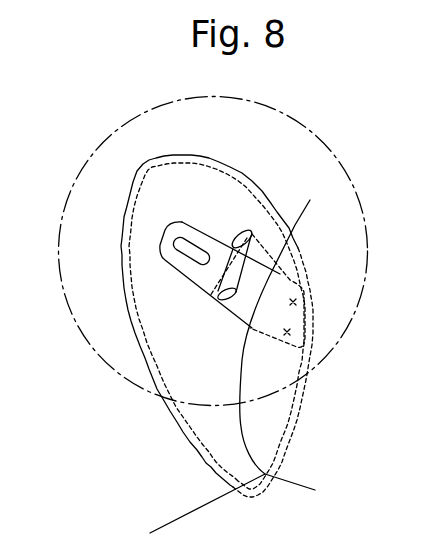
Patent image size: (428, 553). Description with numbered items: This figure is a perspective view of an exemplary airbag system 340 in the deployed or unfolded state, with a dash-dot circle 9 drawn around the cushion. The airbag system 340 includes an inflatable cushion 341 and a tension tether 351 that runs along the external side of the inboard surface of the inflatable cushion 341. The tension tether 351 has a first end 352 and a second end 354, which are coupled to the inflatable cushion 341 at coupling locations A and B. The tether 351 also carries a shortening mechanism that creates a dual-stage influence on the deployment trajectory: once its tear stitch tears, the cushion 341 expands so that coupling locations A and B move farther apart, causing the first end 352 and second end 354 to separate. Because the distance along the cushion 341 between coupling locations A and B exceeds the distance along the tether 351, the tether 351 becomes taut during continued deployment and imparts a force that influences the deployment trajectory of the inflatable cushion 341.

The circular region 9 is at (318, 127).
The airbag system 340 is at (86, 139).
The inflatable cushion 341 is at (236, 200).
The tension tether 351 is at (246, 304).
The first end 352 is at (178, 243).
The second end 354 is at (296, 320).
The coupling location A is at (290, 332).
The coupling location B is at (178, 243).